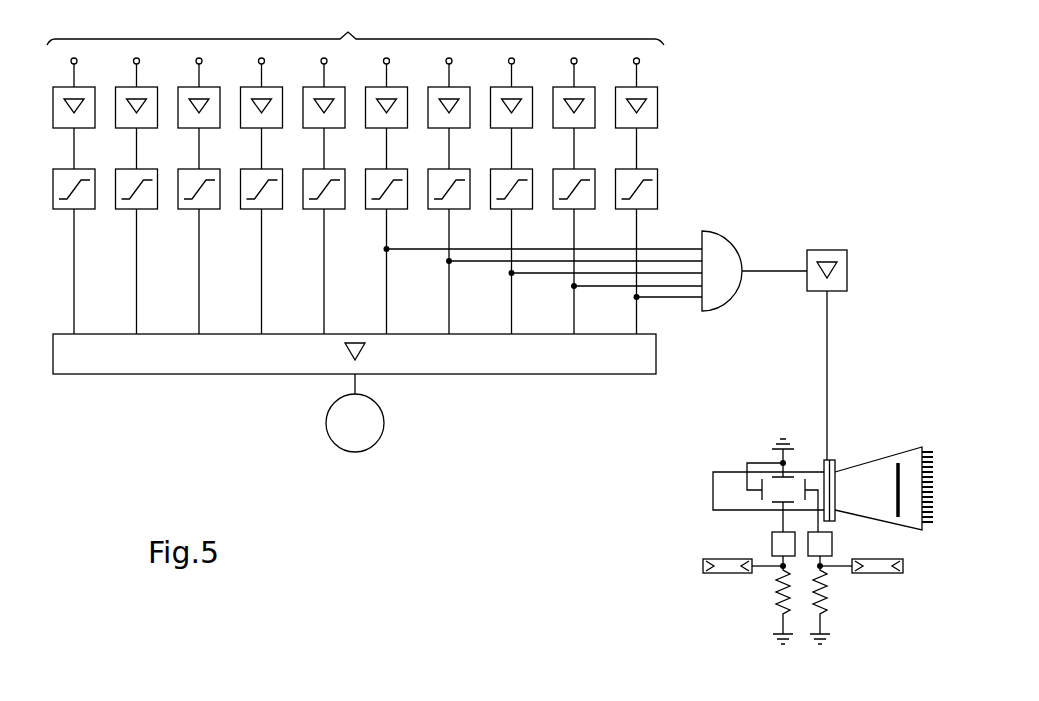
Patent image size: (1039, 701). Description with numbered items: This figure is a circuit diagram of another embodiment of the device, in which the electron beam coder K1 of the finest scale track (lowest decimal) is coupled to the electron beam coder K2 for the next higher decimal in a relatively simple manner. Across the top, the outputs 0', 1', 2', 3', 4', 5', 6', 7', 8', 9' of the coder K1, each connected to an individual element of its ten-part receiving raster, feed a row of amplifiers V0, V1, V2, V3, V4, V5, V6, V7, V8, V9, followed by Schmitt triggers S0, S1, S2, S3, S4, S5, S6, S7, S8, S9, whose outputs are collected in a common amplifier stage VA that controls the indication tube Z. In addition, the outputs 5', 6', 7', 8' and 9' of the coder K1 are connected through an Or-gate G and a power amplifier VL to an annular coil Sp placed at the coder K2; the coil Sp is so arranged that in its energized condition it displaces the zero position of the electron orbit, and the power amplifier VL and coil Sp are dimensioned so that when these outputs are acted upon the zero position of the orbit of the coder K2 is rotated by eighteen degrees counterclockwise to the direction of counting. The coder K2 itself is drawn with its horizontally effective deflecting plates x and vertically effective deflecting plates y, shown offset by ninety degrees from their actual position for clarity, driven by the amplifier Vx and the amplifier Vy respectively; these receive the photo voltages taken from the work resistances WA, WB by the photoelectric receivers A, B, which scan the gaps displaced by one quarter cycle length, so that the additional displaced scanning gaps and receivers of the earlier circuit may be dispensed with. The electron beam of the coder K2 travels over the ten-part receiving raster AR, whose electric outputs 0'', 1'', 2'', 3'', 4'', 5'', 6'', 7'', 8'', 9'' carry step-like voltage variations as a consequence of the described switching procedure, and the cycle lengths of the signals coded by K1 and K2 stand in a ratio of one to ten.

The electron beam coder K1 is at (355, 27).
The output 0' is at (87, 69).
The output 1' is at (150, 69).
The output 2' is at (212, 69).
The output 3' is at (275, 69).
The output 4' is at (337, 69).
The output 5' is at (400, 69).
The output 6' is at (462, 69).
The output 7' is at (525, 69).
The output 8' is at (587, 69).
The output 9' is at (650, 69).
The amplifier V0 is at (53, 123).
The amplifier V1 is at (118, 123).
The amplifier V2 is at (181, 123).
The amplifier V3 is at (244, 123).
The amplifier V4 is at (306, 123).
The amplifier V5 is at (368, 123).
The amplifier V6 is at (431, 123).
The amplifier V7 is at (494, 123).
The amplifier V8 is at (556, 123).
The amplifier V9 is at (618, 123).
The Schmitt trigger S0 is at (55, 209).
The Schmitt trigger S1 is at (120, 209).
The Schmitt trigger S2 is at (182, 209).
The Schmitt trigger S3 is at (244, 209).
The Schmitt trigger S4 is at (307, 209).
The Schmitt trigger S5 is at (370, 209).
The Schmitt trigger S6 is at (432, 209).
The Schmitt trigger S7 is at (494, 209).
The Schmitt trigger S8 is at (557, 209).
The Schmitt trigger S9 is at (620, 209).
The amplifier stage VA is at (176, 361).
The indication tube Z is at (330, 424).
The Or-gate G is at (730, 257).
The power amplifier VL is at (841, 257).
The annular coil Sp is at (825, 461).
The electron beam coder K2 is at (878, 475).
The receiving raster AR is at (805, 490).
The horizontally effective deflecting plates x is at (760, 491).
The vertically effective deflecting plates y is at (795, 476).
The amplifier Vy is at (772, 545).
The amplifier Vx is at (832, 541).
The photoelectric receiver A is at (722, 574).
The photoelectric receiver B is at (878, 574).
The work resistance WA is at (771, 600).
The work resistance WB is at (828, 604).
The output 0'' is at (940, 409).
The output 1'' is at (957, 401).
The output 2'' is at (971, 418).
The output 3'' is at (975, 441).
The output 4'' is at (973, 488).
The output 5'' is at (974, 513).
The output 6'' is at (976, 534).
The output 7'' is at (972, 554).
The output 8'' is at (962, 573).
The output 9'' is at (942, 579).